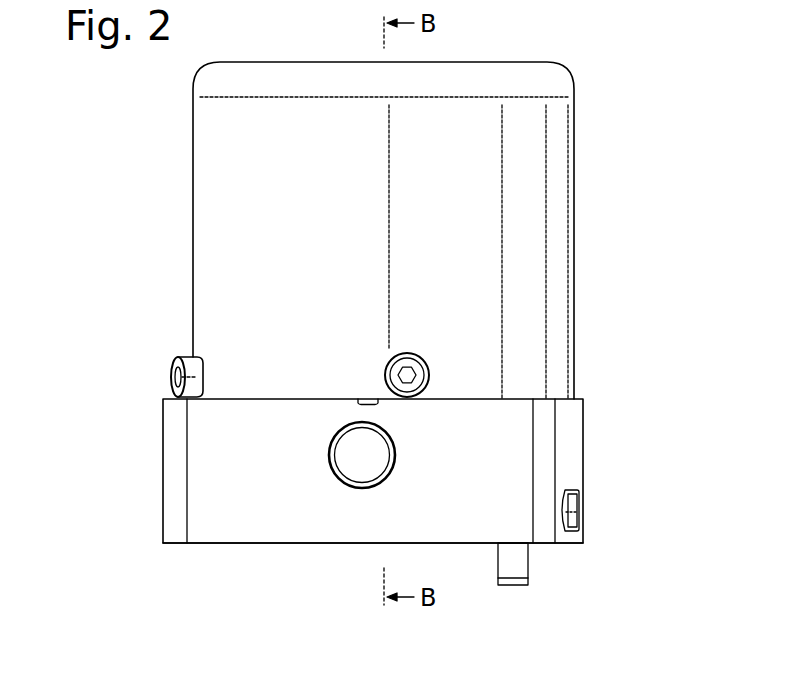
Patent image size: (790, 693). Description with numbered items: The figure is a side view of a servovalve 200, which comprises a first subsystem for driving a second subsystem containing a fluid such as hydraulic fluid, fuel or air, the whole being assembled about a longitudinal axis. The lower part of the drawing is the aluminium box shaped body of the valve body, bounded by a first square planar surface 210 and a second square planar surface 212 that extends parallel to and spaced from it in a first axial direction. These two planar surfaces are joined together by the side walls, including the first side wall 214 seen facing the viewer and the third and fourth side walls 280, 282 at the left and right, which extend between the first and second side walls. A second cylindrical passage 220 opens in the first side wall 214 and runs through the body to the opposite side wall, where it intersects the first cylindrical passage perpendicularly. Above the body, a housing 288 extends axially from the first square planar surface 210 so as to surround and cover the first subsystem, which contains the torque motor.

The servovalve 200 is at (624, 281).
The first square planar surface 210 is at (579, 398).
The second square planar surface 212 is at (257, 545).
The first side wall 214 is at (210, 507).
The second cylindrical passage 220 is at (340, 467).
The third side wall 280 is at (584, 464).
The fourth side wall 282 is at (163, 432).
The housing 288 is at (557, 125).